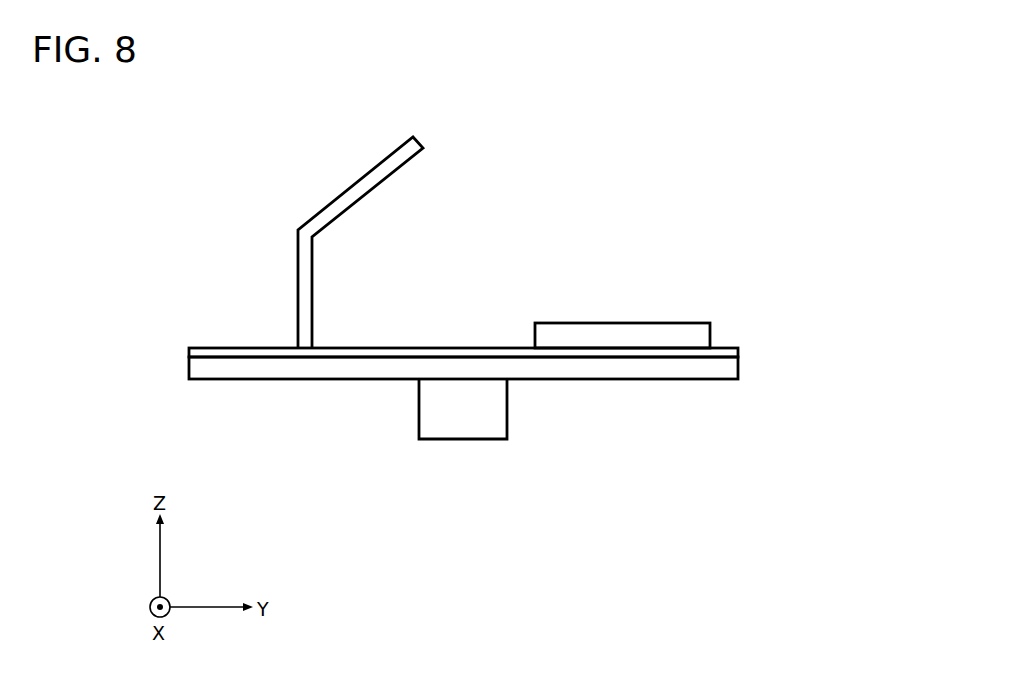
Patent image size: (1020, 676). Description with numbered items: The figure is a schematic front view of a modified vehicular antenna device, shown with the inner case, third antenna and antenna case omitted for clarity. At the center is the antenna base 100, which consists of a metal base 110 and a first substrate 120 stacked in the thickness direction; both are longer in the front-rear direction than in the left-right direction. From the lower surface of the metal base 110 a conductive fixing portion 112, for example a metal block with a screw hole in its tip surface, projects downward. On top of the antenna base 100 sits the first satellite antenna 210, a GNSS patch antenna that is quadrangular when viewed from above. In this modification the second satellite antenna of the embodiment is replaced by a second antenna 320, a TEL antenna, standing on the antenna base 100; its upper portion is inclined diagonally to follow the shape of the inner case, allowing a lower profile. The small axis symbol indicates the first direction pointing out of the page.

The antenna base 100 is at (544, 339).
The metal base 110 is at (740, 364).
The fixing portion 112 is at (508, 405).
The first substrate 120 is at (727, 348).
The first satellite antenna 210 is at (662, 322).
The second antenna 320 is at (345, 192).